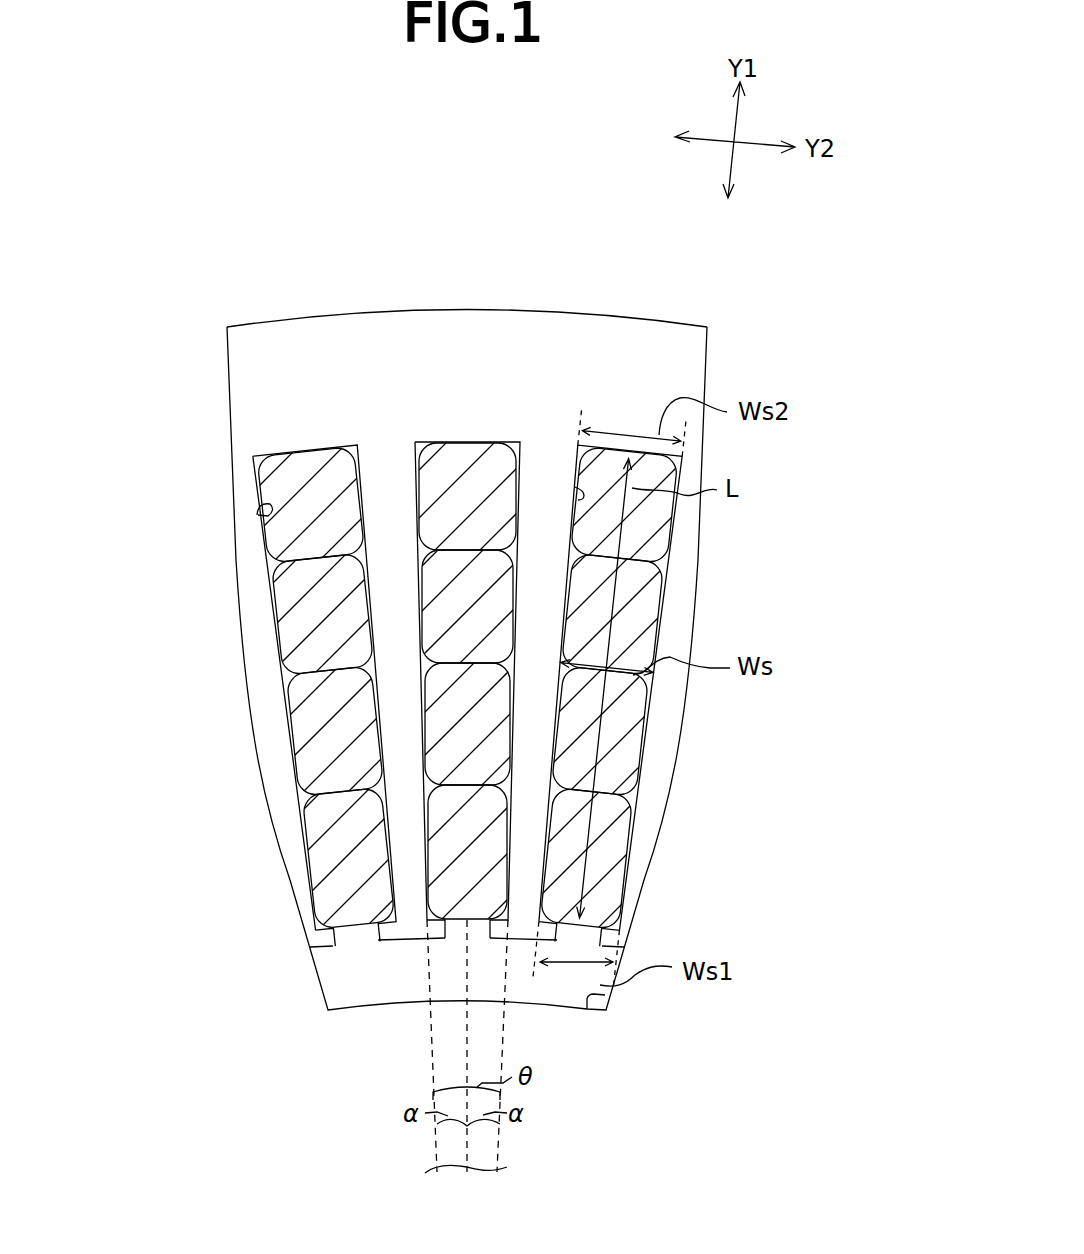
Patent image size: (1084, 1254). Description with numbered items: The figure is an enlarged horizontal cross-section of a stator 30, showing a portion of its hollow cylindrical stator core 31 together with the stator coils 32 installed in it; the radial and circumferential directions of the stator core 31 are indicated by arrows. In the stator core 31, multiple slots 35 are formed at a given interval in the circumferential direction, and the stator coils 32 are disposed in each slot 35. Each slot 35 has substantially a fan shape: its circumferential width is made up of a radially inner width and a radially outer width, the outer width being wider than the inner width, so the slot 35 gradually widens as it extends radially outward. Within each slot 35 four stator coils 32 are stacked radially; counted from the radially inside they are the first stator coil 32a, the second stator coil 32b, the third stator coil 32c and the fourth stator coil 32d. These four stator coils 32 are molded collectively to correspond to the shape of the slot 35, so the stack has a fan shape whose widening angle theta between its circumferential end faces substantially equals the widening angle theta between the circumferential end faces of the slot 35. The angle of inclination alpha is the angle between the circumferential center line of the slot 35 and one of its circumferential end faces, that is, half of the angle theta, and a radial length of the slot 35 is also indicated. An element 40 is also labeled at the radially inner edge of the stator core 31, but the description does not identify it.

The stator 30 is at (752, 350).
The stator core 31 is at (276, 320).
The stator coil 32 is at (648, 607).
The first stator coil 32a is at (443, 853).
The second stator coil 32b is at (443, 713).
The third stator coil 32c is at (433, 580).
The fourth stator coil 32d is at (437, 527).
The slot 35 is at (257, 515).
The notch 40 is at (605, 995).